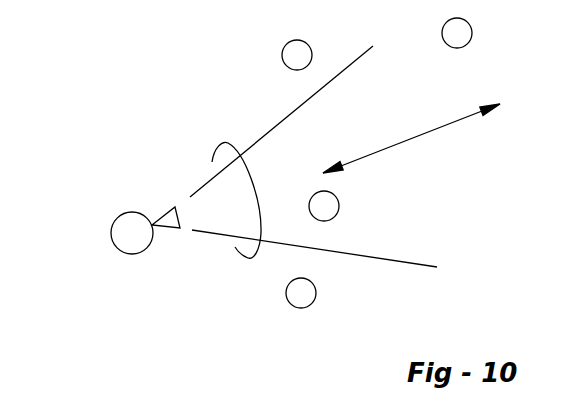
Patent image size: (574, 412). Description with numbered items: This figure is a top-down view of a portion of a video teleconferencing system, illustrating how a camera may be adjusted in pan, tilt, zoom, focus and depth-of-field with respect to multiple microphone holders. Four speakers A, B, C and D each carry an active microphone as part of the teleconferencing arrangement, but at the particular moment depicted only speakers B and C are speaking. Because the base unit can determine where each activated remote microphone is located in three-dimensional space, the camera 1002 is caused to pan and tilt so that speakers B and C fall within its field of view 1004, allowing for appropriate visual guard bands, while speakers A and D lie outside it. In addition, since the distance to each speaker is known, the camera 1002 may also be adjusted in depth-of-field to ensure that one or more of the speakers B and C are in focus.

The camera 1002 is at (123, 222).
The field of view 1004 is at (218, 150).
The speaker A is at (297, 55).
The speaker B is at (457, 33).
The speaker C is at (324, 206).
The speaker D is at (301, 293).